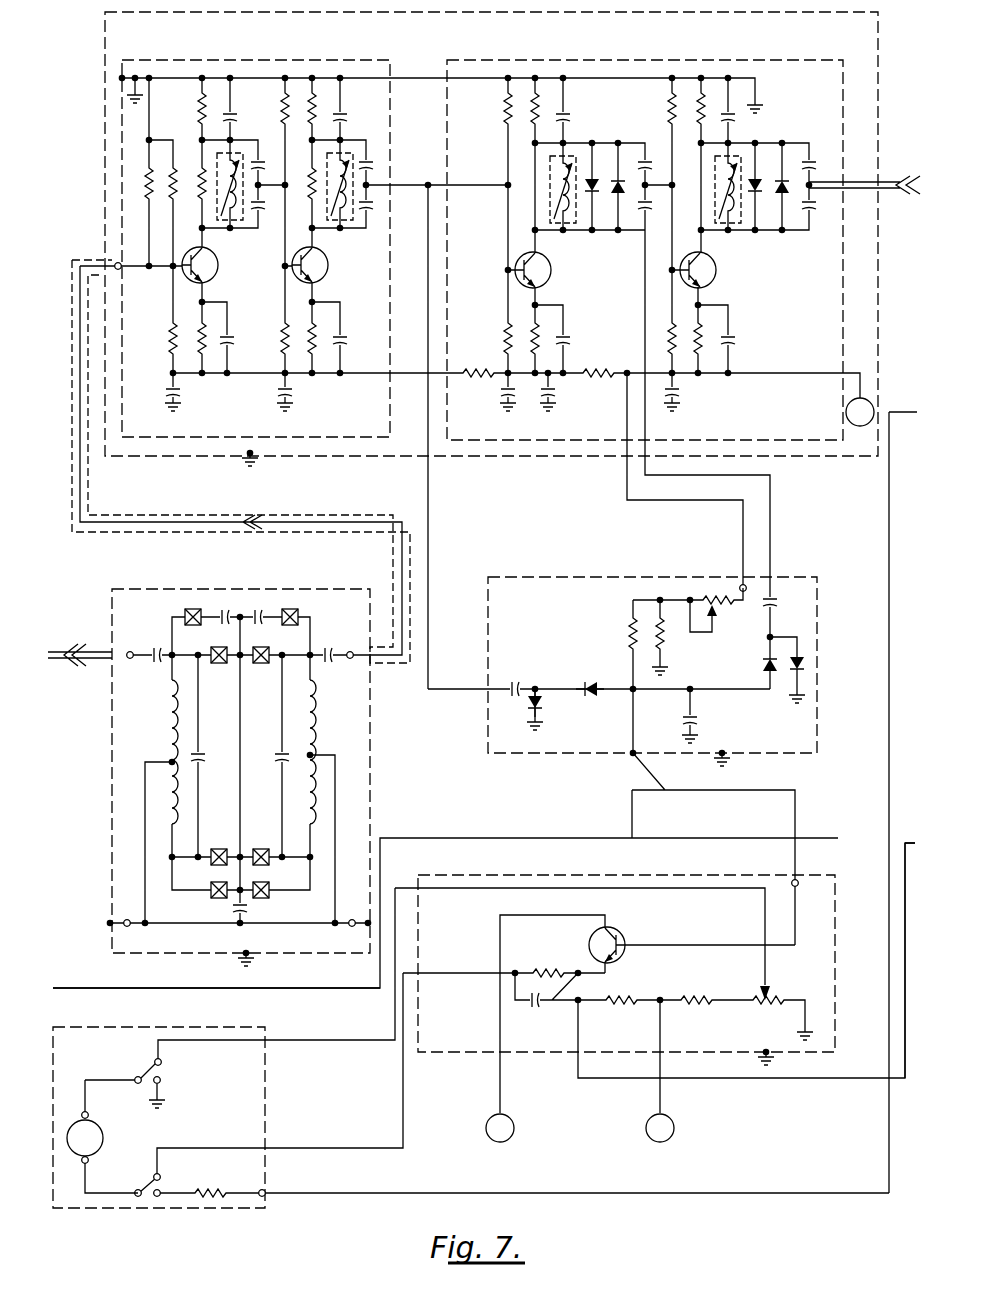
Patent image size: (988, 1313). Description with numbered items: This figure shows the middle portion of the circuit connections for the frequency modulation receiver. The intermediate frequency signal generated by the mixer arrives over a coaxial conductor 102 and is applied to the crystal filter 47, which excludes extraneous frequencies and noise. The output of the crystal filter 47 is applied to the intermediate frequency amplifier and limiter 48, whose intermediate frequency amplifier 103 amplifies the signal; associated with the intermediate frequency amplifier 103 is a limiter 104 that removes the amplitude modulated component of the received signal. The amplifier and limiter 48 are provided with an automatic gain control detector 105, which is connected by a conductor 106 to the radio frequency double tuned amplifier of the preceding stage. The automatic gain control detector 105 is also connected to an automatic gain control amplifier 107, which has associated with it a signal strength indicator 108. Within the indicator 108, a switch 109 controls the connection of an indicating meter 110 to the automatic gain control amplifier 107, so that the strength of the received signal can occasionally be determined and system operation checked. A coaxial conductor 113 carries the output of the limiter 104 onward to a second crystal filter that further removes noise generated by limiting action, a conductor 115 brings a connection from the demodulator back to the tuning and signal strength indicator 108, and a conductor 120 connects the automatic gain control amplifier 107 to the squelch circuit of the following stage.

The intermediate frequency amplifier and limiter 48 is at (480, 50).
The intermediate frequency amplifier 103 is at (380, 276).
The limiter 104 is at (802, 316).
The coaxial conductor 113 is at (896, 199).
The conductor 115 is at (902, 410).
The automatic gain control detector 105 is at (604, 650).
The automatic gain control amplifier 107 is at (694, 926).
The conductor 120 is at (903, 848).
The crystal filter 47 is at (157, 627).
The coaxial conductor 102 is at (84, 668).
The conductor 106 is at (75, 985).
The signal strength indicator 108 is at (468, 1106).
The switch 109 is at (126, 1062).
The indicating meter 110 is at (103, 1139).